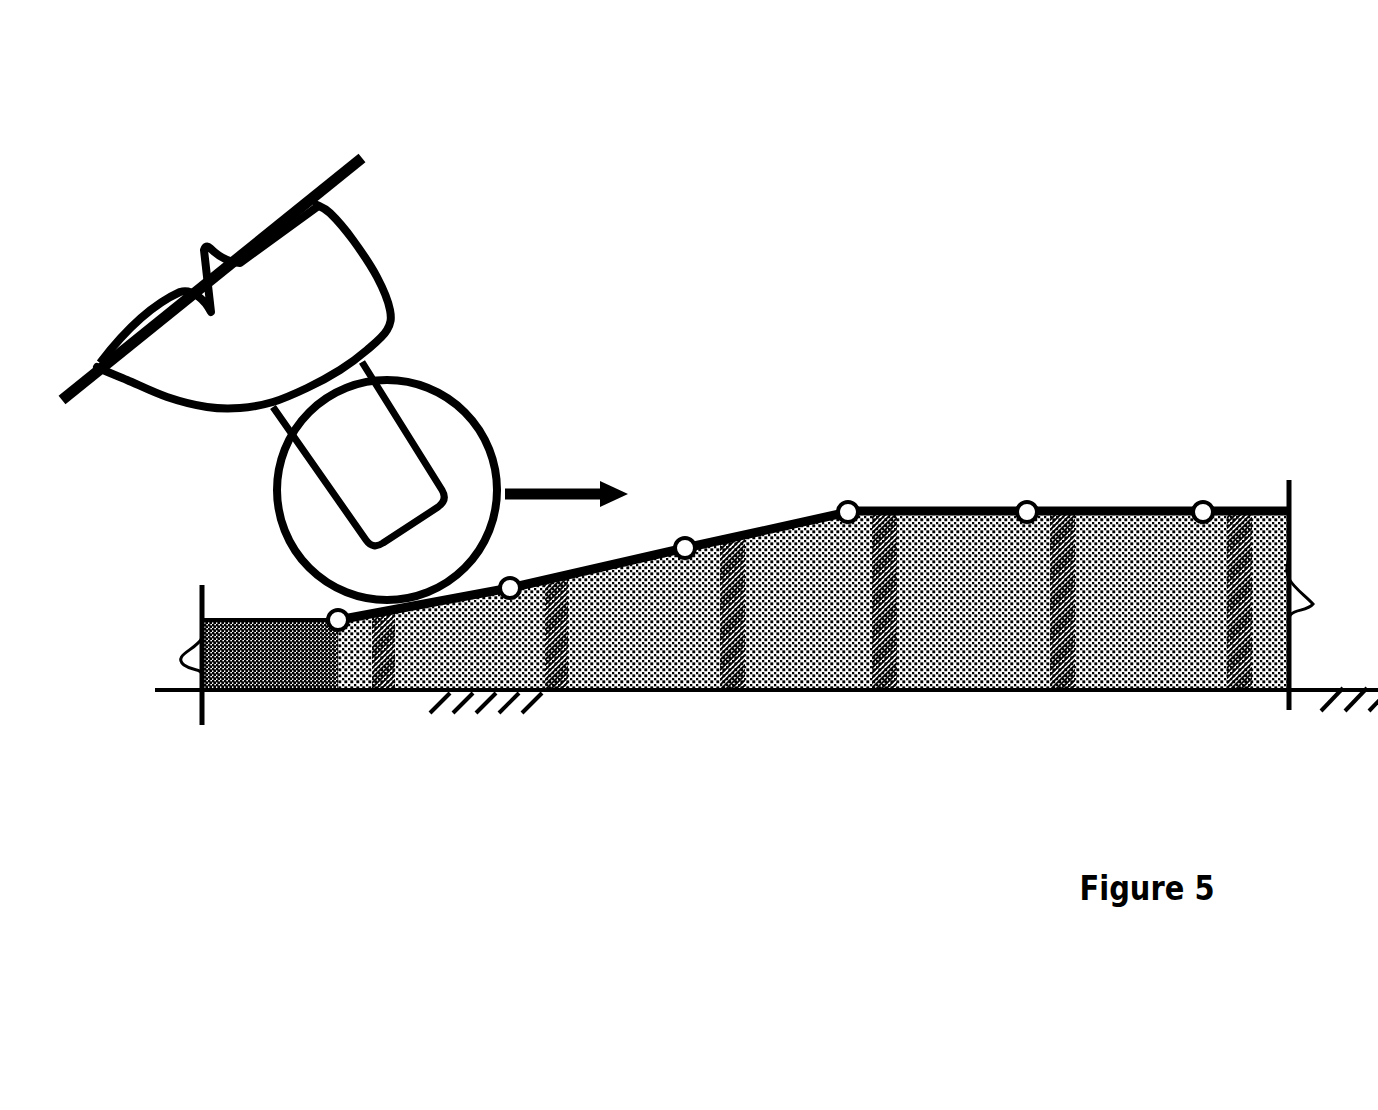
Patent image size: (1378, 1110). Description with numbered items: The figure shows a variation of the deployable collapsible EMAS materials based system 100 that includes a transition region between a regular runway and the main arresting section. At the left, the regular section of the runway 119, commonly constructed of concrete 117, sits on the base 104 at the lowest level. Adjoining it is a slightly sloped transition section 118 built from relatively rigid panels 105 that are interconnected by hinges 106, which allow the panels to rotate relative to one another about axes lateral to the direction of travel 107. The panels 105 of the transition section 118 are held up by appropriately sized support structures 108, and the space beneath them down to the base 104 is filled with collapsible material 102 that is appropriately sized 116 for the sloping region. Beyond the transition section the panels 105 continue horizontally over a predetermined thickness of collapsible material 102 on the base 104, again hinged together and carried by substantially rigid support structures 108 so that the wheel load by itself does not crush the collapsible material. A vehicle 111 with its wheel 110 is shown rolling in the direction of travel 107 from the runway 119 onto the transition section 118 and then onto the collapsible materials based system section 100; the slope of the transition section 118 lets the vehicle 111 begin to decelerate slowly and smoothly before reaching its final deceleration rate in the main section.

The deployable collapsible EMAS materials based system 100 is at (1120, 247).
The collapsible material 102 is at (992, 630).
The base 104 is at (1357, 683).
The rigid panels 105 is at (1157, 500).
The hinge 106 is at (1038, 492).
The direction of travel 107 is at (566, 476).
The support structures 108 is at (1227, 643).
The wheel 110 is at (485, 415).
The vehicle 111 is at (365, 250).
The appropriately sized collapsible material 116 is at (603, 633).
The concrete 117 is at (270, 643).
The transition section 118 is at (710, 513).
The regular section of runway 119 is at (242, 607).